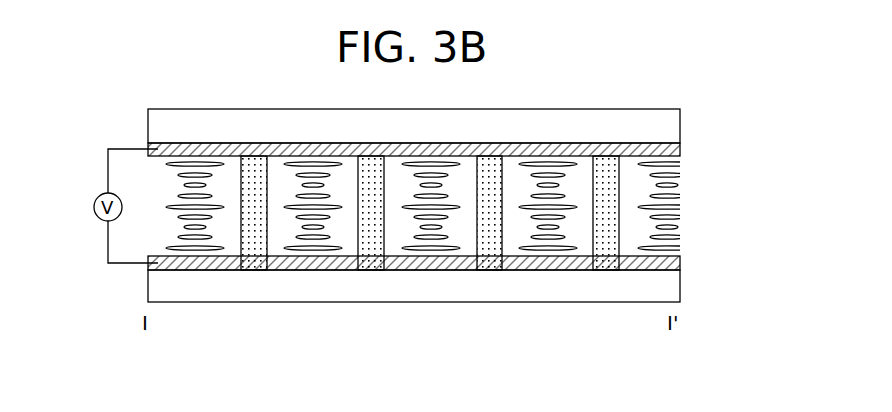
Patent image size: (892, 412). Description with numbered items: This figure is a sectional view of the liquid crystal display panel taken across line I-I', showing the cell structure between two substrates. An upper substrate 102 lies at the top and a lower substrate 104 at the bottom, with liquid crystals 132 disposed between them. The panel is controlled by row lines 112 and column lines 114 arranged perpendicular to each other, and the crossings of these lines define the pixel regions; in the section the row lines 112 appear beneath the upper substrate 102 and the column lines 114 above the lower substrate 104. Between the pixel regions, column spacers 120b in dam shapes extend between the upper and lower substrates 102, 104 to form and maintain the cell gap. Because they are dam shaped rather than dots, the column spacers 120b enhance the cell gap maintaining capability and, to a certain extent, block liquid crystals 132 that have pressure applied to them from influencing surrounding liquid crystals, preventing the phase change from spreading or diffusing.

The upper substrate 102 is at (680, 126).
The row lines 112 is at (680, 150).
The column lines 114 is at (680, 265).
The lower substrate 104 is at (680, 290).
The column spacers 120b is at (253, 270).
The liquid crystals 132 is at (170, 207).